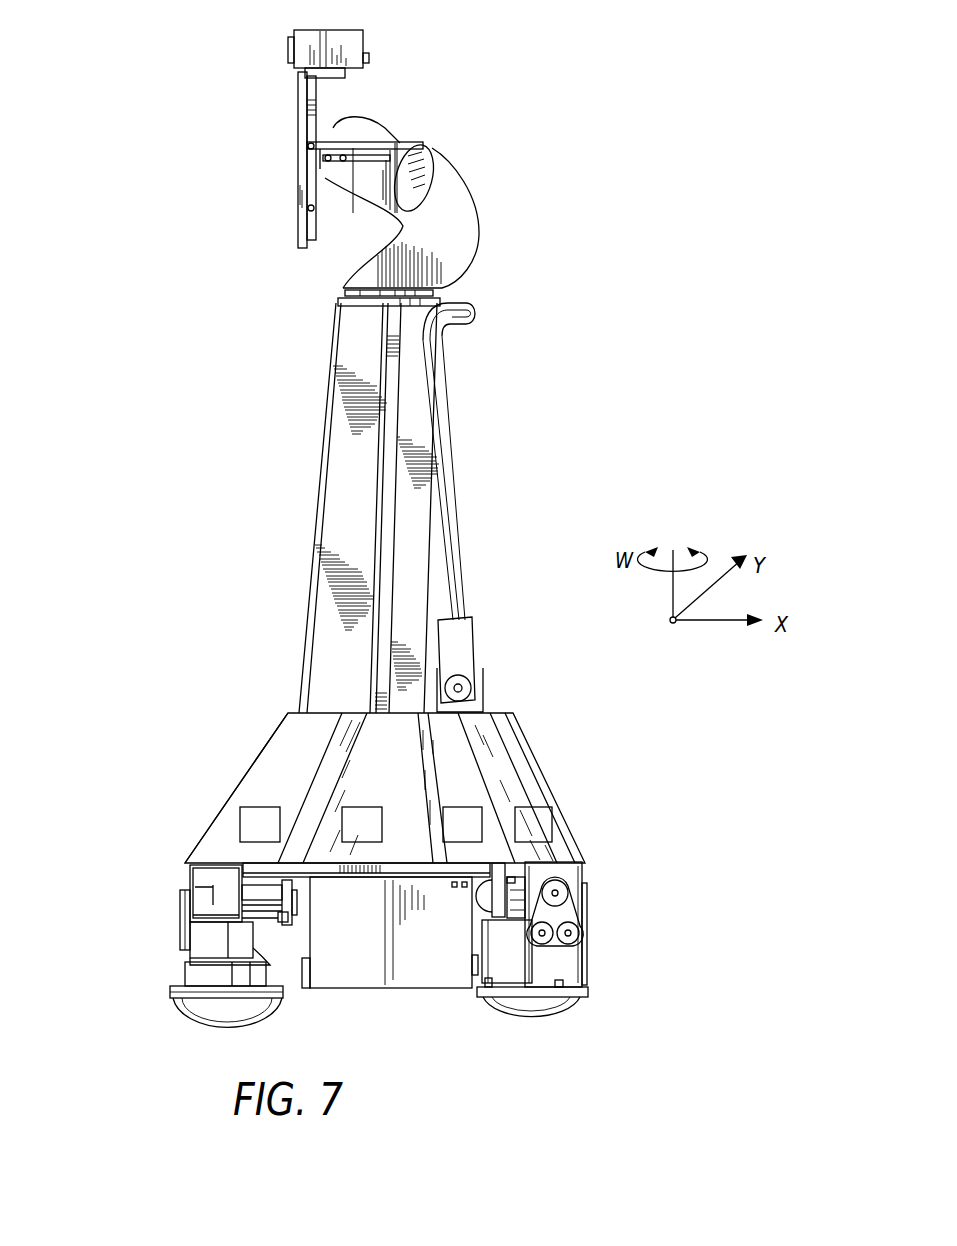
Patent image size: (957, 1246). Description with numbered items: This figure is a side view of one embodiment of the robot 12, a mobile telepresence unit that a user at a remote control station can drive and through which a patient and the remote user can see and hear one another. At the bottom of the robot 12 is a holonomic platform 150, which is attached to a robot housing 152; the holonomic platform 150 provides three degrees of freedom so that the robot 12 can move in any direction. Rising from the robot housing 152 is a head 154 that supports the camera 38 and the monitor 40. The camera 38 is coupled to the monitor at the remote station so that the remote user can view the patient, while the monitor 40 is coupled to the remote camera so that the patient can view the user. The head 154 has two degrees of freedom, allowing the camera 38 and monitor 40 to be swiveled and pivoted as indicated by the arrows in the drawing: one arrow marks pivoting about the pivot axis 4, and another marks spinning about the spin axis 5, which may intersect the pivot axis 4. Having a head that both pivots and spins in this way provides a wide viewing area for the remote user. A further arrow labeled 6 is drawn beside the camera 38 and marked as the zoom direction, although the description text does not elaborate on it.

The pivot axis 4 is at (340, 268).
The spin axis 5 is at (336, 203).
The zoom direction 6 is at (292, 15).
The robot 12 is at (558, 762).
The camera 38 is at (303, 49).
The monitor 40 is at (307, 146).
The holonomic platform 150 is at (405, 994).
The robot housing 152 is at (236, 788).
The head 154 is at (512, 209).